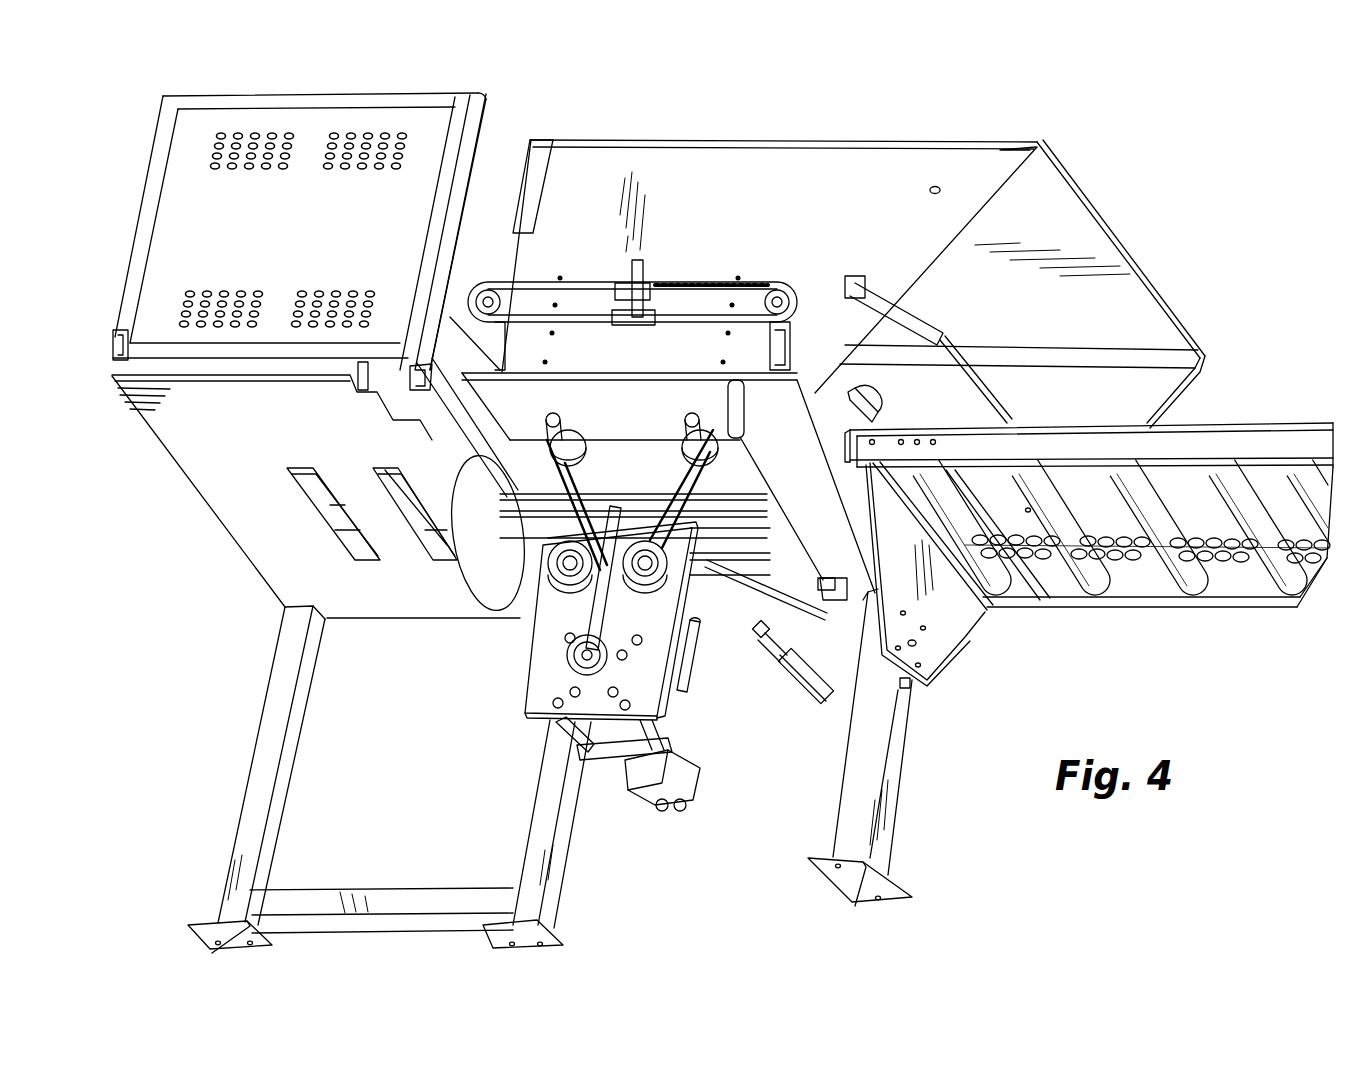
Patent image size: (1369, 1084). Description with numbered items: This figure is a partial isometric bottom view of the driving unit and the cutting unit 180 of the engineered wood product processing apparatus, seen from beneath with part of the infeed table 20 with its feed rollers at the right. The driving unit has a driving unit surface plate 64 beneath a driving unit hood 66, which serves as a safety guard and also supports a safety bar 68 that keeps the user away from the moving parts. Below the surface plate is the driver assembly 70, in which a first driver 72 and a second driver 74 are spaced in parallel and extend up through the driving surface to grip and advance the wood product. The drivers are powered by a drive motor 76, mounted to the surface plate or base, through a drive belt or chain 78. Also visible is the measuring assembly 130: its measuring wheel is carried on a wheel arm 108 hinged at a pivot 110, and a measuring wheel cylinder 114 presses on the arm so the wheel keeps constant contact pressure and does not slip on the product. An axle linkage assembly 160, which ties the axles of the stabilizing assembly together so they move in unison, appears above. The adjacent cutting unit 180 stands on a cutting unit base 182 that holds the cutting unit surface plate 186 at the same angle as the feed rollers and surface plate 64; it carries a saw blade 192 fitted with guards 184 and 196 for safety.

The infeed table 20 is at (1200, 617).
The driving unit surface plate 64 is at (493, 392).
The driving unit hood 66 is at (888, 193).
The safety bar 68 is at (918, 323).
The driver assembly 70 is at (687, 822).
The first driver 72 is at (778, 540).
The second driver 74 is at (618, 477).
The drive motor 76 is at (637, 777).
The drive belt or chain 78 is at (562, 628).
The wheel arm 108 is at (793, 630).
The pivot 110 is at (815, 668).
The measuring wheel cylinder 114 is at (800, 680).
The measuring assembly 130 is at (758, 651).
The axle linkage assembly 160 is at (712, 285).
The cutting unit 180 is at (543, 771).
The cutting unit base 182 is at (285, 781).
The guard 184 is at (336, 228).
The cutting unit surface plate 186 is at (232, 507).
The saw blade 192 is at (510, 582).
The guard 196 is at (438, 350).